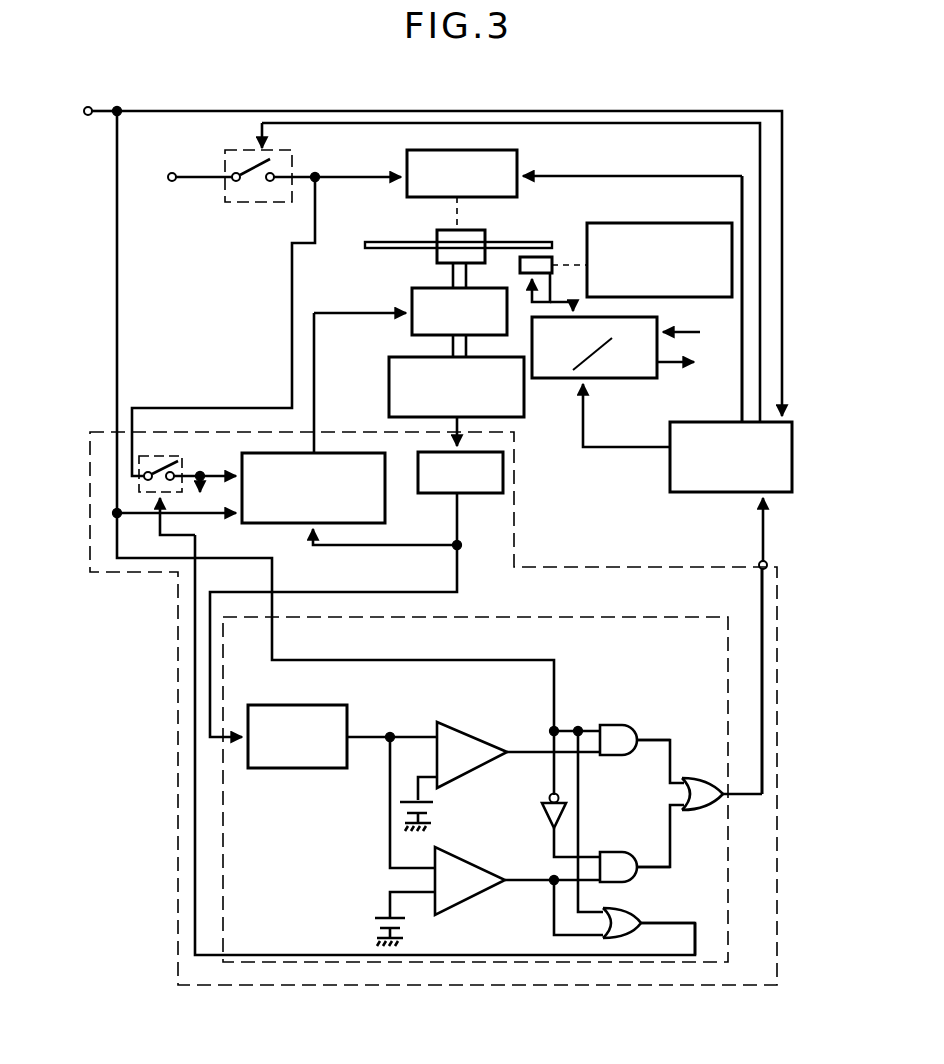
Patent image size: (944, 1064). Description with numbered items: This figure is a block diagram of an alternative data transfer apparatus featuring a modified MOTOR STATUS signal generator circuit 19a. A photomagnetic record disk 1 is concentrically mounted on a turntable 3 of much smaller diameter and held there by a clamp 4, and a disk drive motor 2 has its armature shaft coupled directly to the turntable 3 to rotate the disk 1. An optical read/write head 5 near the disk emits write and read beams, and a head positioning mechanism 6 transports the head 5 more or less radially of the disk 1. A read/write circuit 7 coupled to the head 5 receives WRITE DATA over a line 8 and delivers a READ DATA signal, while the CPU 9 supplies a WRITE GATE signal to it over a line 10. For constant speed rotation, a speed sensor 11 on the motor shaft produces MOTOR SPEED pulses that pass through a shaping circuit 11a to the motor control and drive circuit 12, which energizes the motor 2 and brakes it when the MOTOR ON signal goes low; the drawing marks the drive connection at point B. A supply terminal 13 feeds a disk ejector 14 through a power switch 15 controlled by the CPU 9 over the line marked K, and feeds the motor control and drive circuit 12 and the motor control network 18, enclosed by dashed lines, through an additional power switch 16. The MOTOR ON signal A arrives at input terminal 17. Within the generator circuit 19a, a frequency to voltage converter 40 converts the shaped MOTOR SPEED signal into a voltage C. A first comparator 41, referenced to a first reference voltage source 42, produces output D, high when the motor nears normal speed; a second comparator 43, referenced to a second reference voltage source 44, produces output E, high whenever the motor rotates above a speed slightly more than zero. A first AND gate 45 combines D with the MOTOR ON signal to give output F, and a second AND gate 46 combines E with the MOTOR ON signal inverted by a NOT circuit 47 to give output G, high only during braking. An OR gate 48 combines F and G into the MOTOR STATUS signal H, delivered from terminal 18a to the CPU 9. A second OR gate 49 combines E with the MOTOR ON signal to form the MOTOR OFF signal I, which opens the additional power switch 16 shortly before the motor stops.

The photomagnetic record disk 1 is at (509, 242).
The disk drive motor 2 is at (412, 320).
The turntable 3 is at (436, 259).
The clamp 4 is at (437, 240).
The optical read/write head 5 is at (550, 257).
The head positioning mechanism 6 is at (645, 227).
The read/write circuit 7 is at (630, 380).
The line 8 is at (678, 333).
The central processor unit (CPU) 9 is at (670, 460).
The line 10 is at (596, 447).
The speed sensor 11 is at (389, 375).
The shaping circuit 11a is at (478, 495).
The motor control and drive circuit 12 is at (389, 445).
The supply terminal 13 is at (172, 173).
The disk ejector 14 is at (517, 166).
The power switch 15 is at (292, 164).
The additional power switch 16 is at (184, 460).
The MOTOR ON signal input terminal 17 is at (84, 113).
The motor control network 18 is at (178, 638).
The terminal 18a is at (766, 562).
The MOTOR STATUS signal generator circuit 19a is at (639, 618).
The frequency to voltage converter (FVC) 40 is at (302, 770).
The first comparator 41 is at (465, 730).
The first reference voltage source 42 is at (432, 801).
The second comparator 43 is at (475, 856).
The second reference voltage source 44 is at (378, 916).
The first AND gate 45 is at (612, 724).
The second AND gate 46 is at (603, 852).
The NOT circuit 47 is at (540, 806).
The OR gate 48 is at (696, 778).
The second OR gate 49 is at (646, 910).
The MOTOR ON signal A is at (113, 114).
The motor drive signal B is at (412, 299).
The FVC output voltage signal C is at (386, 736).
The first comparator output D is at (527, 750).
The second comparator output E is at (527, 880).
The first AND gate output F is at (657, 740).
The second AND gate output G is at (647, 866).
The MOTOR STATUS signal H is at (763, 684).
The MOTOR OFF signal I is at (687, 922).
The CPU to ejector control line K is at (742, 366).